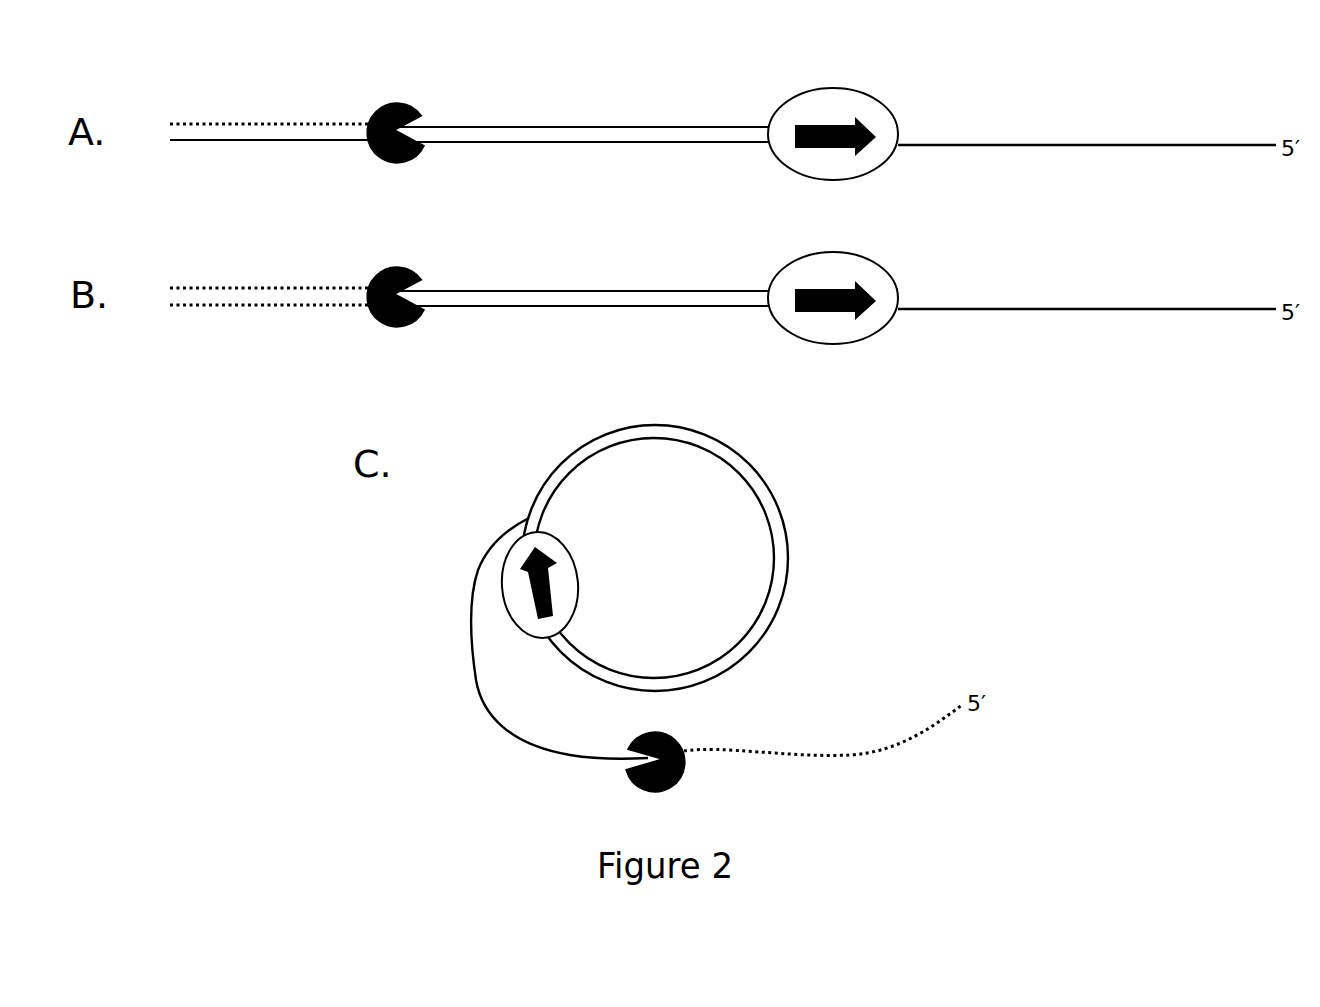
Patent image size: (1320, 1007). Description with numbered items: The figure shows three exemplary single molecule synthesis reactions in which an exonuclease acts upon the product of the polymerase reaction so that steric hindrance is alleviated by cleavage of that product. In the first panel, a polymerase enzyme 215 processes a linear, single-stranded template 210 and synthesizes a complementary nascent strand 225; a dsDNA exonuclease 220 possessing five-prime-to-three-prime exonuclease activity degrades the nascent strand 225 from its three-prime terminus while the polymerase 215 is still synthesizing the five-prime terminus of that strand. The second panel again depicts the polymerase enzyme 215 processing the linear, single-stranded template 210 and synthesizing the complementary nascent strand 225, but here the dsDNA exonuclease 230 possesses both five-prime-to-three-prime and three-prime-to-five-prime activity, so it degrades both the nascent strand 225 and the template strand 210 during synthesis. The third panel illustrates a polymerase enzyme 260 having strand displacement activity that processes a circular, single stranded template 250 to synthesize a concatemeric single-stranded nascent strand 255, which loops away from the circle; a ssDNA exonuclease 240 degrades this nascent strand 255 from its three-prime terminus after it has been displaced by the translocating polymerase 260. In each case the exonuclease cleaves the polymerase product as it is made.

The linear, single-stranded template 210 is at (1198, 145).
The polymerase enzyme 215 is at (788, 111).
The dsDNA exonuclease 220 is at (377, 111).
The complementary nascent strand 225 is at (547, 127).
The dsDNA exonuclease 230 is at (377, 275).
The ssDNA exonuclease 240 is at (680, 743).
The circular, single stranded template 250 is at (640, 678).
The concatemeric single-stranded nascent strand 255 is at (473, 661).
The polymerase enzyme 260 is at (568, 574).